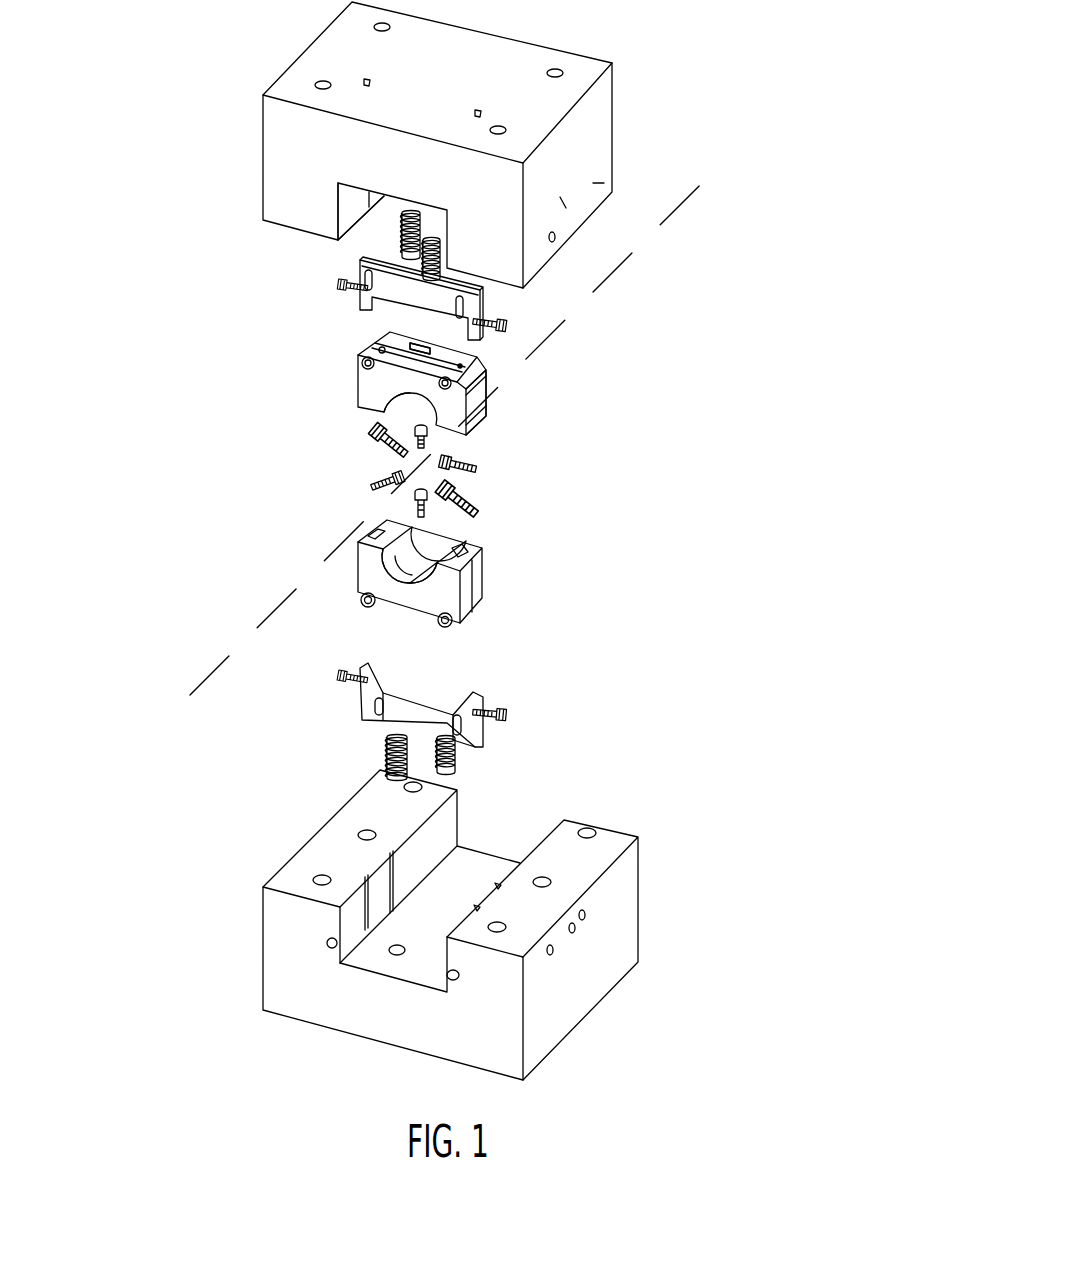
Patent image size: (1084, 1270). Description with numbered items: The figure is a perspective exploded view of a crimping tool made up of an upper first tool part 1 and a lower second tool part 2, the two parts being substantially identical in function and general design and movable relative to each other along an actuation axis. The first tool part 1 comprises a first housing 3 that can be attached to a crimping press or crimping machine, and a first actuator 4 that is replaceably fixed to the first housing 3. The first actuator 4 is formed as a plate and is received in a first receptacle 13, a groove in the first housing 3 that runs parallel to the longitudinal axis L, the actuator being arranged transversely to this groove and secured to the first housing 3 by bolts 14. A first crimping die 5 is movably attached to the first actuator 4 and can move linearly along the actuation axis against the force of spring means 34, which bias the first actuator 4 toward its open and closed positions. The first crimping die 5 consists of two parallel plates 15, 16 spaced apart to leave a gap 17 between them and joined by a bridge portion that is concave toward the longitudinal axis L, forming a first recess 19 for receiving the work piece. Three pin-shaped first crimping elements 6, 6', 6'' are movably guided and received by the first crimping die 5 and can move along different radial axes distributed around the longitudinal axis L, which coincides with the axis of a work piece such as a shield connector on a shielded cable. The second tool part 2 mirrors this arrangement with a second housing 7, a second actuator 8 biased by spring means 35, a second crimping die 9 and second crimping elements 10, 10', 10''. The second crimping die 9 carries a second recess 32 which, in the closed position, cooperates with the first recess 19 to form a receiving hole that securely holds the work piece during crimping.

The first tool part 1 is at (683, 235).
The second tool part 2 is at (538, 871).
The first housing 3 is at (602, 142).
The first actuator 4 is at (483, 300).
The first crimping die 5 is at (487, 363).
The first crimping element 6 is at (471, 441).
The first crimping element 6' is at (348, 445).
The first crimping element 6'' is at (490, 470).
The second housing 7 is at (625, 872).
The second actuator 8 is at (483, 735).
The second crimping die 9 is at (483, 586).
The second crimping element 10 is at (471, 521).
The second crimping element 10' is at (346, 498).
The second crimping element 10'' is at (486, 500).
The first receptacle 13 is at (347, 213).
The bolts 14 is at (343, 292).
The plate 15 is at (487, 383).
The plate 16 is at (483, 408).
The gap 17 is at (410, 350).
The first recess 19 is at (372, 411).
The second recess 32 is at (395, 550).
The spring means 34 is at (432, 242).
The spring means 35 is at (397, 766).
The longitudinal axis L is at (608, 292).